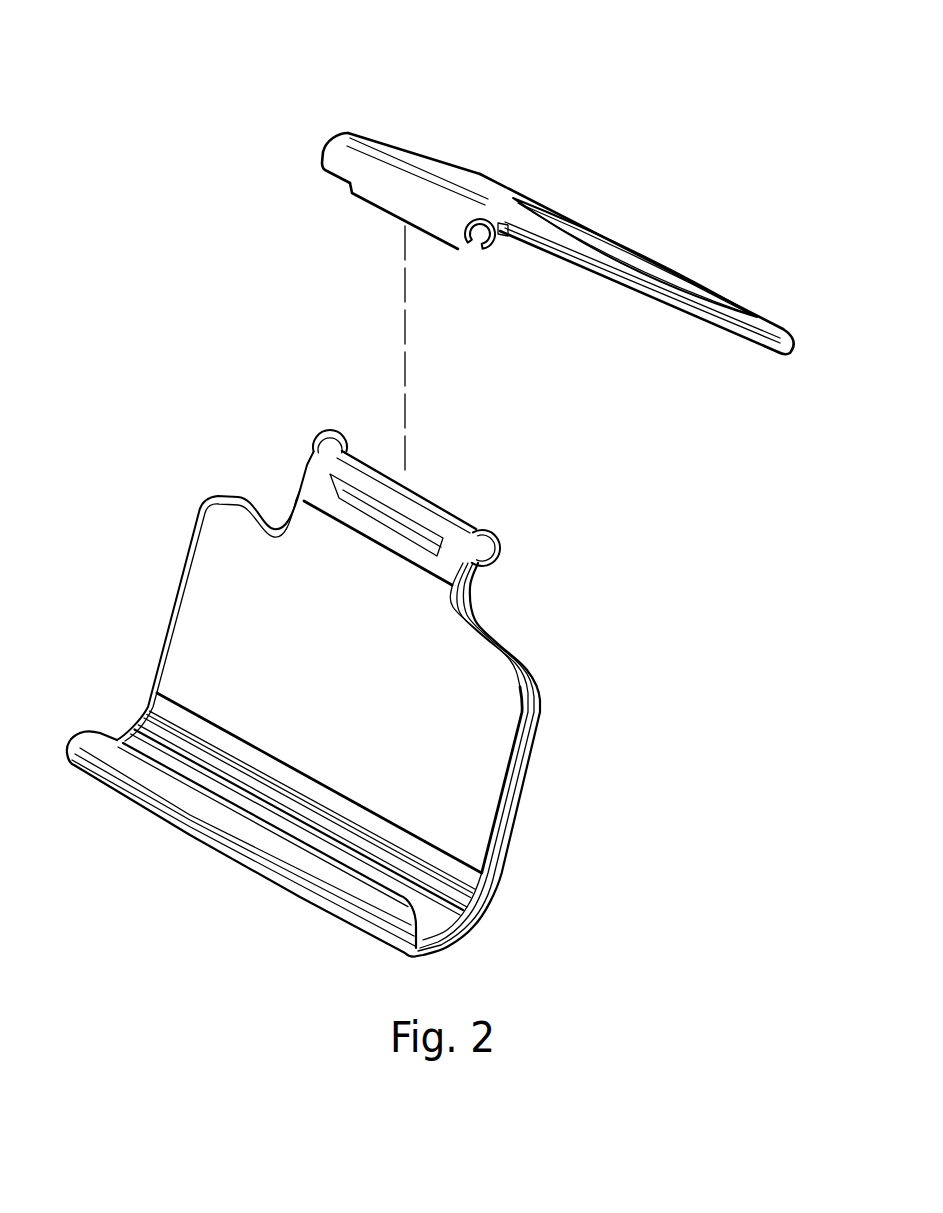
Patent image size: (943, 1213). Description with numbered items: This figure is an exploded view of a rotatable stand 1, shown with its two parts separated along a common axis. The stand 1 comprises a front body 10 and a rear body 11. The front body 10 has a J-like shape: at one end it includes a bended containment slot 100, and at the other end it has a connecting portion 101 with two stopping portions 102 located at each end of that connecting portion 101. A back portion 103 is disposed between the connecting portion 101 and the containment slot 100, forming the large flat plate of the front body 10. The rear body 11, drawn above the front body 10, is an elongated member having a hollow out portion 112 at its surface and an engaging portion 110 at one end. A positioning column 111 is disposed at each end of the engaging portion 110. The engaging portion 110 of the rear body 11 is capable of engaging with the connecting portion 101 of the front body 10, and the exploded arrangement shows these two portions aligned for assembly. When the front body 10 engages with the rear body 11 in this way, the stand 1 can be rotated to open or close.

The stand 1 is at (243, 247).
The front body 10 is at (208, 497).
The containment slot 100 is at (430, 912).
The connecting portion 101 is at (440, 508).
The stopping portion 102 is at (500, 555).
The back portion 103 is at (210, 597).
The rear body 11 is at (480, 182).
The engaging portion 110 is at (365, 152).
The positioning column 111 is at (497, 233).
The hollow out portion 112 is at (627, 250).